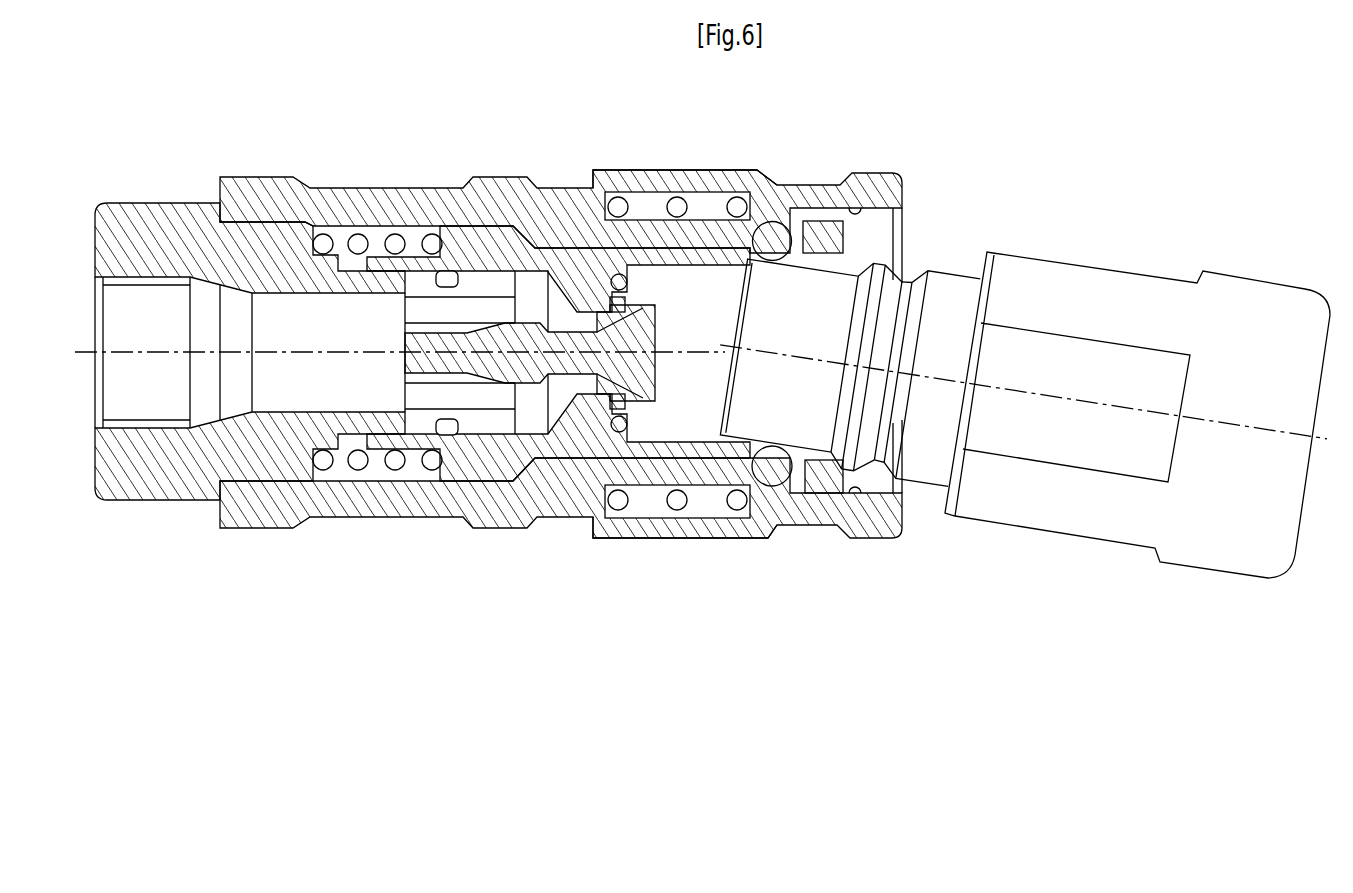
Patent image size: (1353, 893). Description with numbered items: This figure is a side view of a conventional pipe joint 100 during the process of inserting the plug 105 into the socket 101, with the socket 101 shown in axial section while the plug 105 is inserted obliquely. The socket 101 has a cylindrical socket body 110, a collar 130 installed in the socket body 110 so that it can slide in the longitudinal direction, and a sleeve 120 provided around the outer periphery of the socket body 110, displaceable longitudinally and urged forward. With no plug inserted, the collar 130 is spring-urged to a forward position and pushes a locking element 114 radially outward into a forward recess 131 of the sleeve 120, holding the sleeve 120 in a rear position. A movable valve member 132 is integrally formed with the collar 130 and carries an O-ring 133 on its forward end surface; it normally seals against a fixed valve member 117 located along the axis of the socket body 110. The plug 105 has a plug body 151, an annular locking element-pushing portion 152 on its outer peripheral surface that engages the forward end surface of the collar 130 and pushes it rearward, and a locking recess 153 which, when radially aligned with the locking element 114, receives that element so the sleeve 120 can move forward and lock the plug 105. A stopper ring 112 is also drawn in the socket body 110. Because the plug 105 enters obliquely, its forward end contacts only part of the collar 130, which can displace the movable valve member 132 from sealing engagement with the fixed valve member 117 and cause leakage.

The pipe joint 100 is at (1207, 166).
The socket 101 is at (310, 165).
The plug 105 is at (1251, 273).
The socket body 110 is at (548, 186).
The stopper ring 112 is at (801, 225).
The locking element 114 is at (771, 222).
The fixed valve member 117 is at (656, 359).
The sleeve 120 is at (669, 168).
The collar 130 is at (650, 250).
The forward recess 131 is at (856, 208).
The movable valve member 132 is at (633, 300).
The O-ring 133 is at (629, 282).
The plug body 151 is at (810, 282).
The locking element-pushing portion 152 is at (866, 270).
The locking recess 153 is at (912, 280).